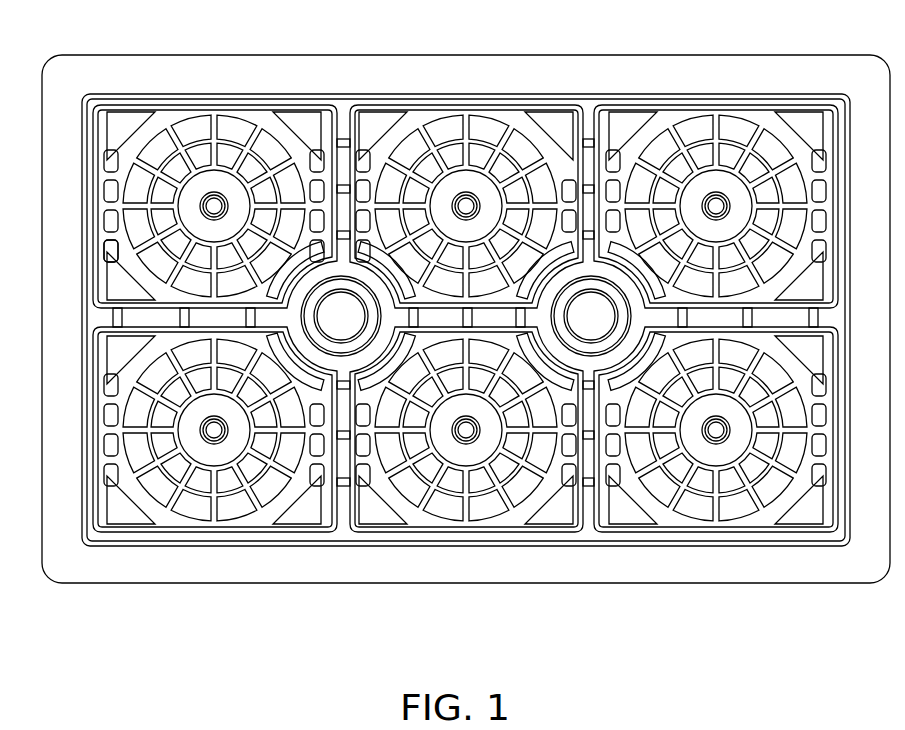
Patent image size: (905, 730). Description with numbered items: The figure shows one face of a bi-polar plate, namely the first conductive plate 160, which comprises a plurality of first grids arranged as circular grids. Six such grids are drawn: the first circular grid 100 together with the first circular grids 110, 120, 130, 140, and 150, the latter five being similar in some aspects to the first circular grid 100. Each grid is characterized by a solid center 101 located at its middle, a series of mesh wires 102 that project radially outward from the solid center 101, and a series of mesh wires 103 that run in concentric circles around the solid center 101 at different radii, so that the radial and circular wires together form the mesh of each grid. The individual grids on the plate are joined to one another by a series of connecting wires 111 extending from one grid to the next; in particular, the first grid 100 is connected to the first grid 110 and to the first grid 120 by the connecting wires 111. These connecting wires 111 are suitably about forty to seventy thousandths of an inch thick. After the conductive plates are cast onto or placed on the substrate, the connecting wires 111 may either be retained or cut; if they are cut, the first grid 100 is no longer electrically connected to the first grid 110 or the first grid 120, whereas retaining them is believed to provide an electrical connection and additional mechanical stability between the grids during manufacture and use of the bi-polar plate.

The first circular grid 100 is at (100, 160).
The solid center 101 is at (203, 223).
The mesh wires projecting radially outward 102 is at (108, 258).
The mesh wires in concentric circles 103 is at (113, 122).
The first circular grid 110 is at (430, 112).
The connecting wires 111 is at (118, 318).
The first circular grid 120 is at (98, 490).
The first circular grid 130 is at (760, 112).
The first circular grid 140 is at (797, 525).
The first circular grid 150 is at (498, 525).
The first conductive plate 160 is at (128, 115).